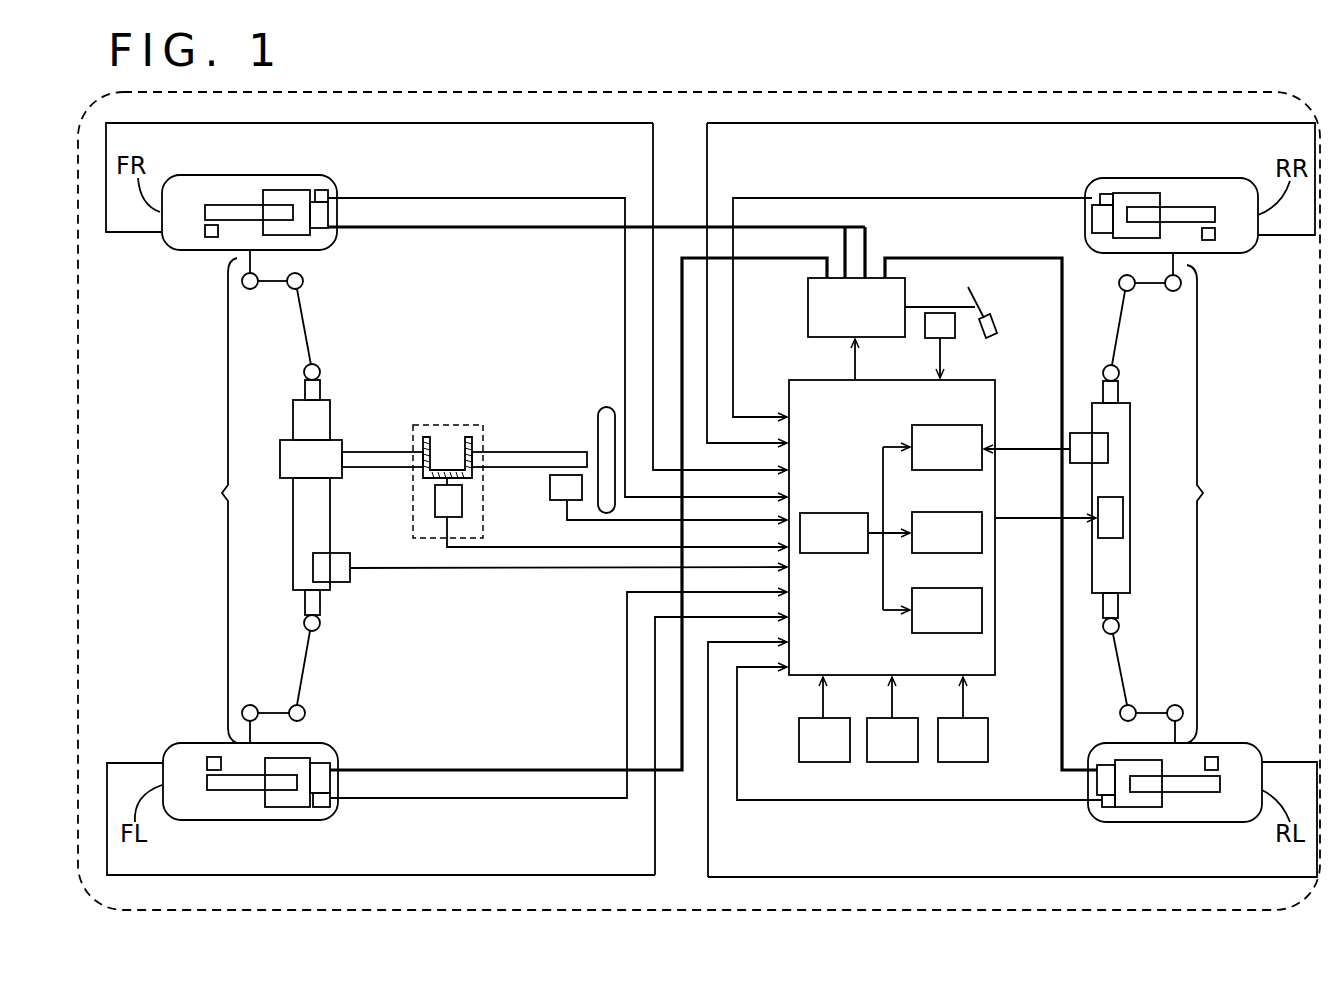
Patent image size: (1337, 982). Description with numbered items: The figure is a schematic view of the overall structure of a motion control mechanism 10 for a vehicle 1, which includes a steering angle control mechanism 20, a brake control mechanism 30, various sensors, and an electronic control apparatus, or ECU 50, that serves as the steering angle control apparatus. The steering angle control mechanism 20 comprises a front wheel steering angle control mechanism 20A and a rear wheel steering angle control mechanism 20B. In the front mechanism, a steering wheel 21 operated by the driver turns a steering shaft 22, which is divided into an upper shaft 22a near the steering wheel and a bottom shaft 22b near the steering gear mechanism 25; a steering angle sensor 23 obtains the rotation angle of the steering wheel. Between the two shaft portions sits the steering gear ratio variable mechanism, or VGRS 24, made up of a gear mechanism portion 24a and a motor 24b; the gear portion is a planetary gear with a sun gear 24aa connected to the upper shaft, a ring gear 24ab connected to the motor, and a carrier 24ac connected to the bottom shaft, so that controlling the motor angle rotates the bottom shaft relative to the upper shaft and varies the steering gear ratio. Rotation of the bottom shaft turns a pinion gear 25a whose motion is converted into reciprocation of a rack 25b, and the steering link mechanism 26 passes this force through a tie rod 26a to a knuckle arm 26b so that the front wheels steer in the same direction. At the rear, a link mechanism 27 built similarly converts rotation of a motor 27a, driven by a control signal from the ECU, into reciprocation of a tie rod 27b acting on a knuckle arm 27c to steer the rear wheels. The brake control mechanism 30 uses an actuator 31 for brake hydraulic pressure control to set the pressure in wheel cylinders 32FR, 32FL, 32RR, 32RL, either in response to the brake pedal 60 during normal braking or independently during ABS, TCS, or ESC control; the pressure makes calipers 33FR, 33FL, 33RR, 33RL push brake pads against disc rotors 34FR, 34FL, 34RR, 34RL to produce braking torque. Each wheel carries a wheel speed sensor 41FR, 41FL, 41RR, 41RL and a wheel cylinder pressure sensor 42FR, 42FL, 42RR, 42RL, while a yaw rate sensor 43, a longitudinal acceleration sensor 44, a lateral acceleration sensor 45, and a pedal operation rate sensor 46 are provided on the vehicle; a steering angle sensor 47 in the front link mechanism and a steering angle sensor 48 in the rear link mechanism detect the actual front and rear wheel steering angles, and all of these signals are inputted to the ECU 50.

The vehicle 1 is at (565, 92).
The motion control mechanism 10 is at (685, 160).
The steering angle control mechanism 20 is at (482, 572).
The front wheel steering angle control mechanism 20A is at (445, 612).
The rear wheel steering angle control mechanism 20B is at (1210, 608).
The steering wheel 21 is at (606, 407).
The steering shaft 22 is at (388, 440).
The upper shaft 22a is at (585, 452).
The bottom shaft 22b is at (360, 452).
The steering angle sensor 23 is at (550, 487).
The steering gear ratio variable mechanism (VGRS) 24 is at (413, 532).
The gear mechanism portion 24a is at (452, 437).
The sun gear 24aa is at (471, 442).
The ring gear 24ab is at (460, 505).
The carrier 24ac is at (430, 437).
The motor 24b is at (448, 528).
The steering gear mechanism 25 is at (325, 615).
The pinion gear 25a is at (340, 478).
The rack 25b is at (322, 600).
The steering link mechanism 26 is at (247, 496).
The tie rod 26a is at (305, 330).
The knuckle arm 26b is at (273, 283).
The link mechanism 27 is at (1163, 498).
The motor 27a is at (1115, 538).
The tie rod 27b is at (1120, 660).
The knuckle arm 27c is at (1150, 713).
The brake control mechanism 30 is at (806, 305).
The actuator for brake hydraulic pressure control 31 is at (905, 292).
The wheel cylinder 32FR is at (325, 250).
The wheel cylinder 32FL is at (335, 748).
The wheel cylinder 32RR is at (1090, 225).
The wheel cylinder 32RL is at (1097, 782).
The caliper 33FR is at (275, 190).
The caliper 33FL is at (288, 807).
The caliper 33RR is at (1140, 193).
The caliper 33RL is at (1145, 808).
The disc rotor 34FR is at (215, 205).
The disc rotor 34FL is at (212, 790).
The disc rotor 34RR is at (1215, 207).
The disc rotor 34RL is at (1205, 792).
The wheel speed sensor 41FR is at (208, 237).
The wheel speed sensor 41FL is at (208, 757).
The wheel speed sensor 41RR is at (1212, 240).
The wheel speed sensor 41RL is at (1218, 757).
The wheel cylinder pressure sensor 42FR is at (322, 190).
The wheel cylinder pressure sensor 42FL is at (318, 808).
The wheel cylinder pressure sensor 42RR is at (1100, 194).
The wheel cylinder pressure sensor 42RL is at (1105, 808).
The yaw rate sensor 43 is at (799, 740).
The longitudinal acceleration sensor 44 is at (892, 762).
The lateral acceleration sensor 45 is at (988, 740).
The pedal operation rate sensor 46 is at (960, 336).
The steering angle sensor 47 is at (350, 570).
The steering angle sensor 48 is at (1085, 433).
The electronic control apparatus (ECU) 50 is at (996, 612).
The brake pedal 60 is at (996, 328).